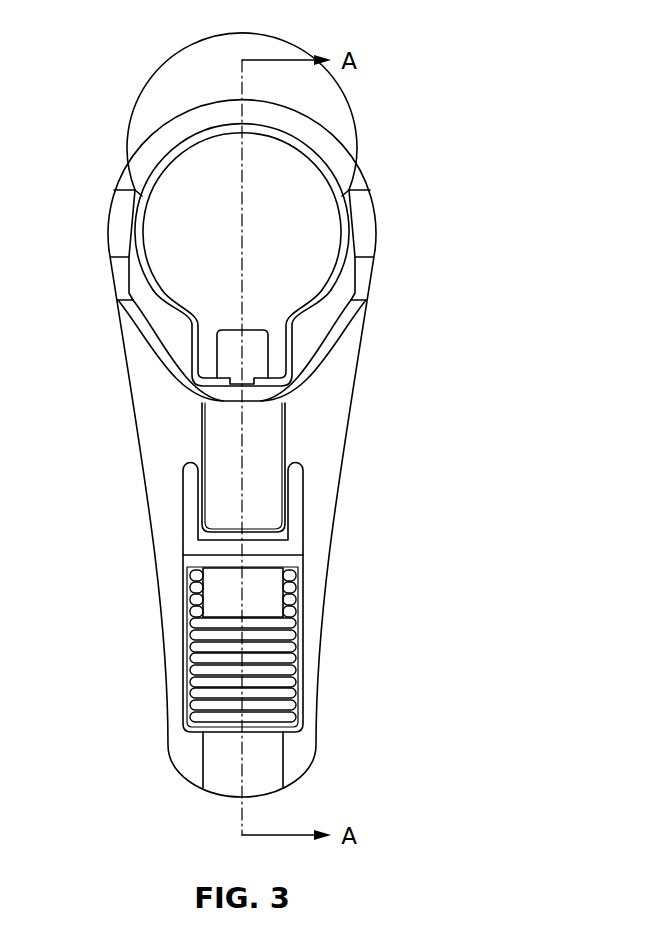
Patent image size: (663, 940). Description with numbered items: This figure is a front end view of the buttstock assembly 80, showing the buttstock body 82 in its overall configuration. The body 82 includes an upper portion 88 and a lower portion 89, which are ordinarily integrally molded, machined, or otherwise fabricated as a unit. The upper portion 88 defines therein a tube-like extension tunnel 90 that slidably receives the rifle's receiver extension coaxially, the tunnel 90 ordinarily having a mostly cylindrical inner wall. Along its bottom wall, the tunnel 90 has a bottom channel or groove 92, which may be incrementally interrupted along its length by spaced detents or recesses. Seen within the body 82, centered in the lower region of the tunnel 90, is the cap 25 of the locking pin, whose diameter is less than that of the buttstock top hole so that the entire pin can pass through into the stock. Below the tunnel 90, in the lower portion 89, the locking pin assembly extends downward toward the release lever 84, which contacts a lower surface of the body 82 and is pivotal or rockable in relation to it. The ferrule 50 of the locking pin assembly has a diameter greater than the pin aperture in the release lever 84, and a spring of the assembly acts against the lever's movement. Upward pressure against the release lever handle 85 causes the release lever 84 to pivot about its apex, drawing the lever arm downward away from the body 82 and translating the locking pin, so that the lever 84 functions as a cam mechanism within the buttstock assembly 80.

The buttstock assembly 80 is at (178, 66).
The upper portion 88 is at (335, 150).
The extension tunnel 90 is at (213, 182).
The bottom channel or groove 92 is at (208, 356).
The cap 25 is at (258, 353).
The buttstock body 82 is at (177, 441).
The lower portion 89 is at (273, 440).
The release lever 84 is at (193, 528).
The ferrule 50 is at (273, 592).
The release lever handle 85 is at (273, 676).